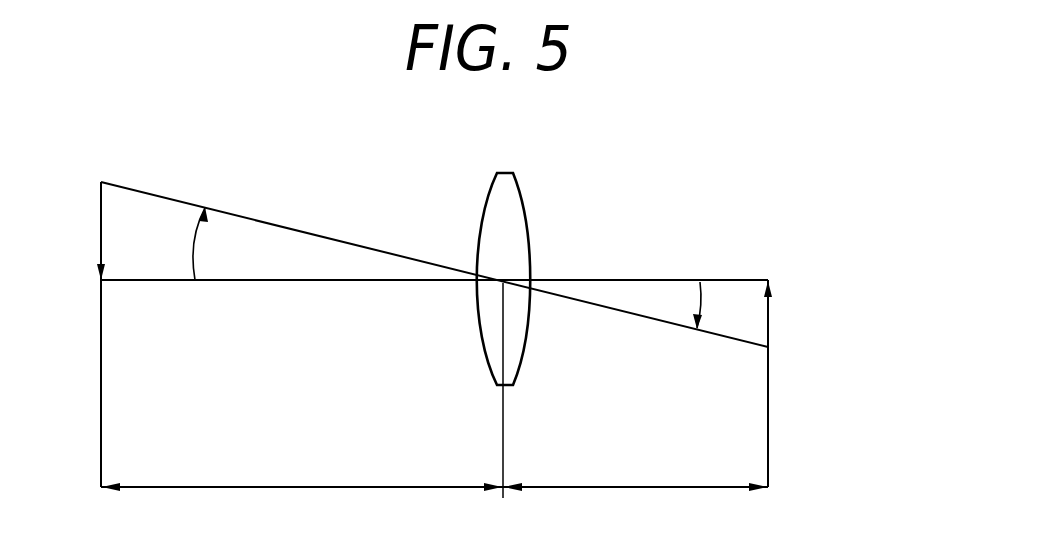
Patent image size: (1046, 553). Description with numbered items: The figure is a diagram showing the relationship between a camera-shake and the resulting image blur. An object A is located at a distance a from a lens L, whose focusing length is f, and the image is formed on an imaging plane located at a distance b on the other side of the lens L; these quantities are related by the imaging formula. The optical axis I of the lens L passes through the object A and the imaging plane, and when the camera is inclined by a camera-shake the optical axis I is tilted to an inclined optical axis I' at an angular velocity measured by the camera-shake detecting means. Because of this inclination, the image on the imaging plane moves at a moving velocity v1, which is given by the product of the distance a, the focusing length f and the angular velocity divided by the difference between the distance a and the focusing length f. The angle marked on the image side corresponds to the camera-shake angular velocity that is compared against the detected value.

The object A is at (101, 223).
The optical axis I is at (434, 312).
The inclined optical axis I' is at (434, 260).
The lens L is at (522, 198).
The moving velocity of image v1 is at (784, 383).
The distance from lens to object a is at (302, 473).
The distance to imaging plane b is at (635, 473).